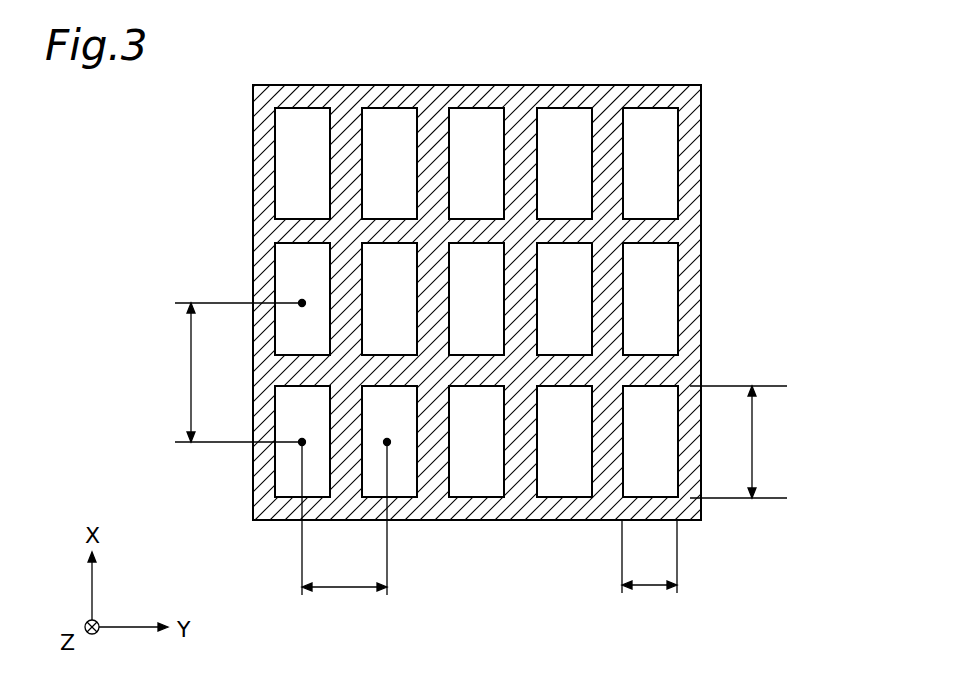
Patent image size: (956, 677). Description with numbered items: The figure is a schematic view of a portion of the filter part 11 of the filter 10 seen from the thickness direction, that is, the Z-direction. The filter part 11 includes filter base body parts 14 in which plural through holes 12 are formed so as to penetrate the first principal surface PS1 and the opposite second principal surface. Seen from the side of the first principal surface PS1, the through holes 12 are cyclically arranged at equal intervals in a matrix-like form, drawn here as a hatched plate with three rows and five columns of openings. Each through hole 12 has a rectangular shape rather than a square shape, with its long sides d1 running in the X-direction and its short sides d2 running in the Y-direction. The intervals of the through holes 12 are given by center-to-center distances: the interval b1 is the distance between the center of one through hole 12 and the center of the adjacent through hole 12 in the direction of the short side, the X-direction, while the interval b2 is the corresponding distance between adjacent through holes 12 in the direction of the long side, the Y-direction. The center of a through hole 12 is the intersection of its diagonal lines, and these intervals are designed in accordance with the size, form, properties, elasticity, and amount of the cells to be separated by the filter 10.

The filter 10 is at (478, 307).
The filter part 11 is at (712, 298).
The through hole 12 is at (473, 480).
The filter base body part 14 is at (522, 92).
The first principal surface PS1 is at (688, 521).
The interval b1 is at (231, 373).
The interval b2 is at (346, 517).
The long side d1 is at (741, 442).
The short side d2 is at (649, 556).